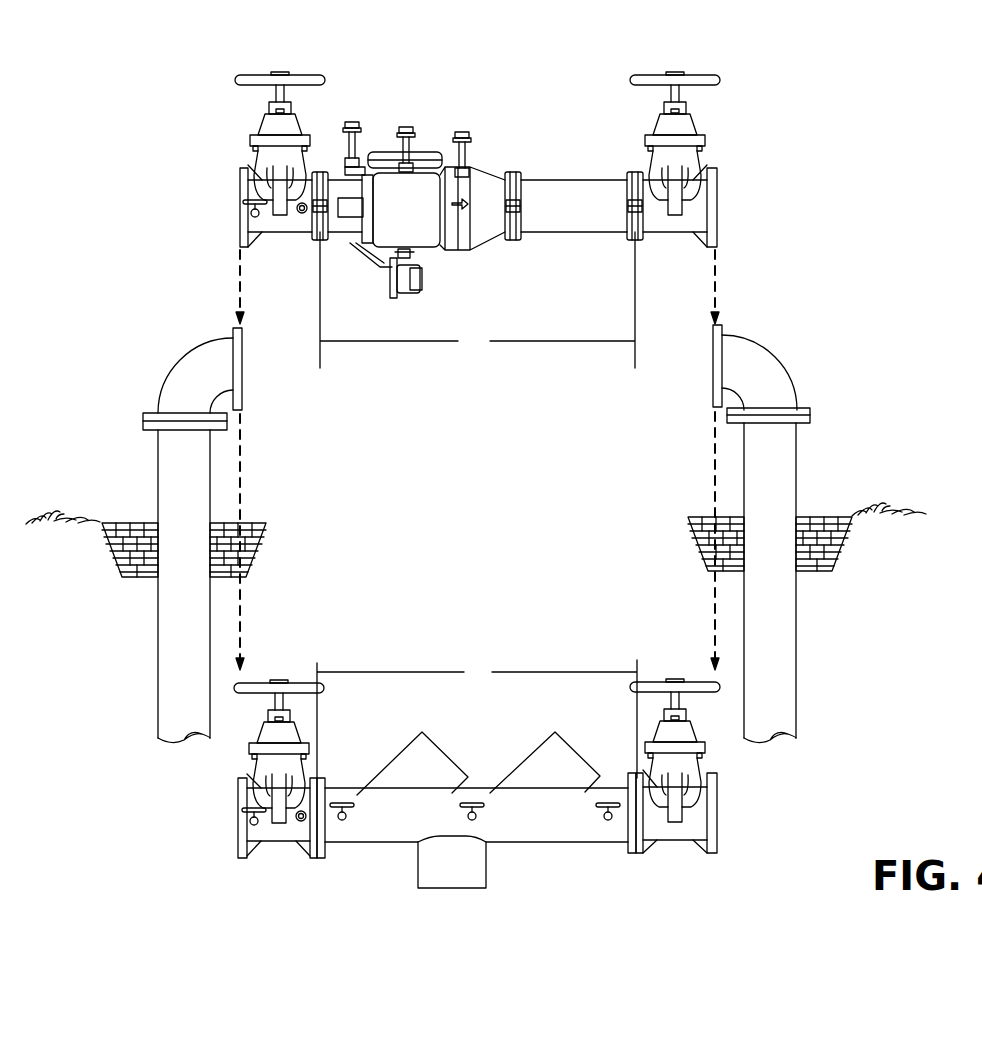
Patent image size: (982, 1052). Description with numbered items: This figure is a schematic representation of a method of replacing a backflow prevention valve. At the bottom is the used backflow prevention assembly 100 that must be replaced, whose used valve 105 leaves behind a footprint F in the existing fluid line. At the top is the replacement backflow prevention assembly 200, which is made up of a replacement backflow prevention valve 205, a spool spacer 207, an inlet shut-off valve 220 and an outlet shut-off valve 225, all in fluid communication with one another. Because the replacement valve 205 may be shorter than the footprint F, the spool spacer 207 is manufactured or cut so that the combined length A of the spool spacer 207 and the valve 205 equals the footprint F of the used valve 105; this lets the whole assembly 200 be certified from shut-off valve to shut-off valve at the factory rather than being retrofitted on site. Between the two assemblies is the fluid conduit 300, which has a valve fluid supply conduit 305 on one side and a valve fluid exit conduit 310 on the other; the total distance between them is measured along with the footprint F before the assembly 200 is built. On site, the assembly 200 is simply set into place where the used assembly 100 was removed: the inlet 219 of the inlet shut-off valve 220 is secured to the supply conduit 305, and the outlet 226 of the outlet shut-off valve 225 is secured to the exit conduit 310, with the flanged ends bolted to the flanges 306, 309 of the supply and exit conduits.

The used backflow prevention assembly 100 is at (606, 660).
The used valve 105 is at (482, 775).
The backflow prevention assembly 200 is at (745, 52).
The backflow prevention valve 205 is at (425, 110).
The spool spacer 207 is at (585, 235).
The inlet 219 is at (238, 210).
The inlet shut-off valve 220 is at (240, 118).
The outlet shut-off valve 225 is at (720, 130).
The outlet 226 is at (724, 205).
The fluid conduit 300 is at (128, 432).
The fluid supply conduit 305 is at (178, 352).
The flange 306 is at (250, 373).
The flange 309 is at (706, 368).
The fluid exit conduit 310 is at (783, 342).